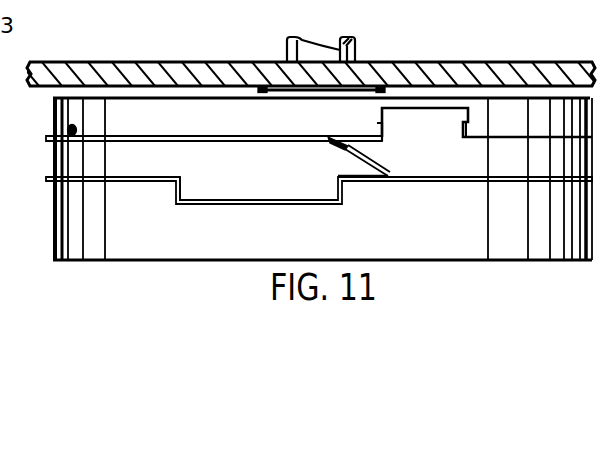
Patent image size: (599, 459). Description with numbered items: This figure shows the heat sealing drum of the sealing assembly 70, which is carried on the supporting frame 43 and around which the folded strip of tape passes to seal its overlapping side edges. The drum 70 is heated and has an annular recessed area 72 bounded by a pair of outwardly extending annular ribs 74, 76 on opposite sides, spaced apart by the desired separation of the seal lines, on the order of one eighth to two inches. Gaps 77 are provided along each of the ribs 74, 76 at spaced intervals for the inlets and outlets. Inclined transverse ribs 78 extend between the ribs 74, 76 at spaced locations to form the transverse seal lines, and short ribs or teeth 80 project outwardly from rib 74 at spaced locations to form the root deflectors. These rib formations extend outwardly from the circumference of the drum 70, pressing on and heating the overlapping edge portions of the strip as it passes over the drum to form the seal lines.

The supporting frame 43 is at (190, 62).
The sealing assembly 70 is at (206, 265).
The annular recessed area 72 is at (57, 161).
The annular rib 74 is at (487, 142).
The annular rib 76 is at (470, 181).
The gaps 77 is at (402, 120).
The inclined transverse ribs 78 is at (338, 152).
The short ribs or teeth 80 is at (77, 129).